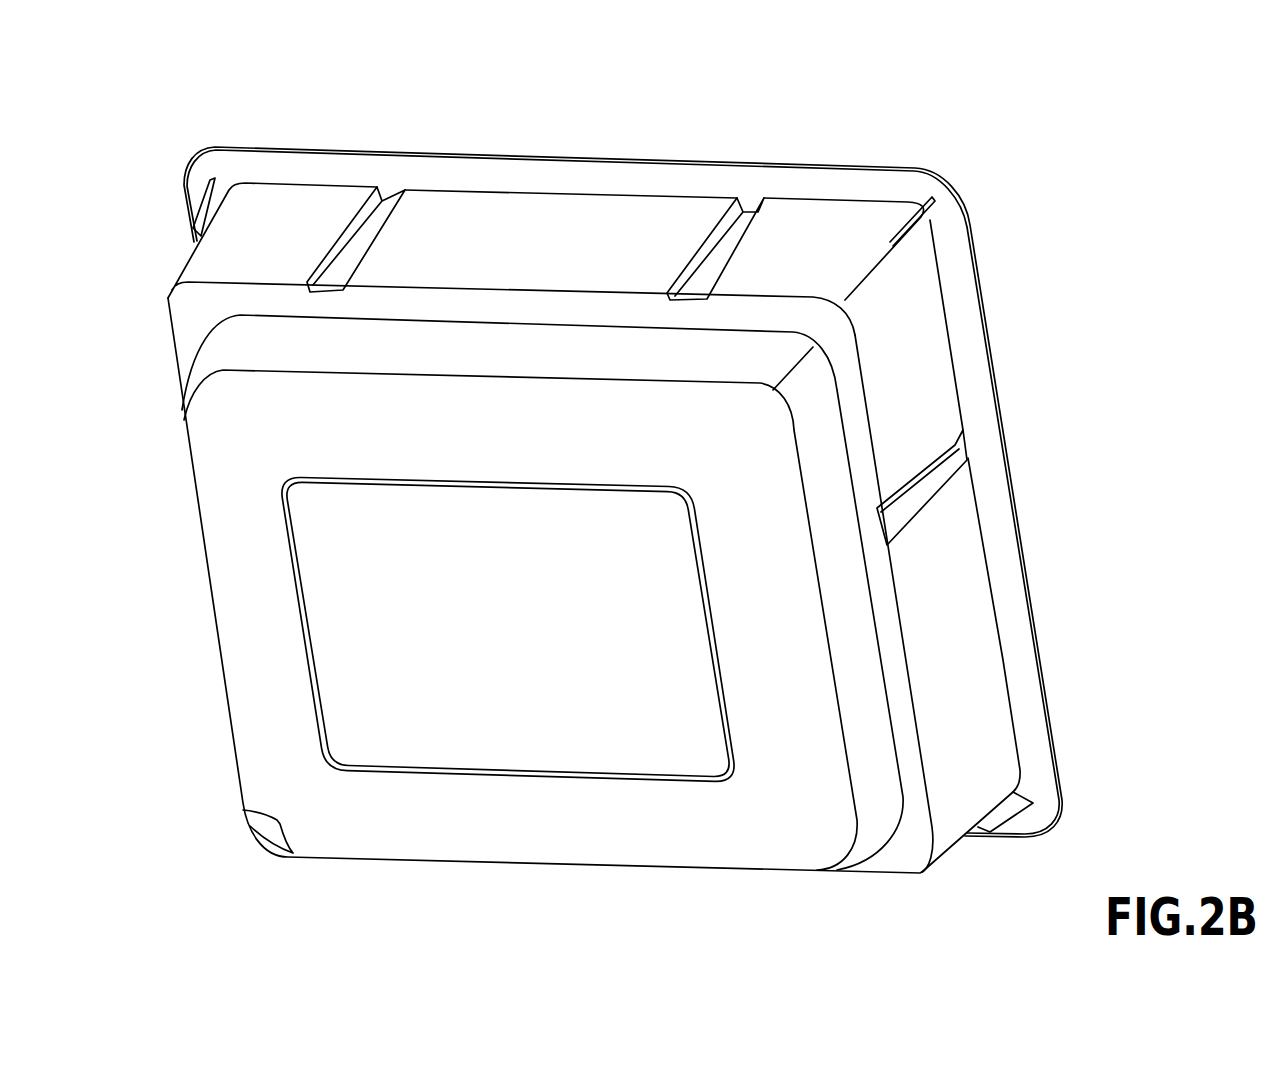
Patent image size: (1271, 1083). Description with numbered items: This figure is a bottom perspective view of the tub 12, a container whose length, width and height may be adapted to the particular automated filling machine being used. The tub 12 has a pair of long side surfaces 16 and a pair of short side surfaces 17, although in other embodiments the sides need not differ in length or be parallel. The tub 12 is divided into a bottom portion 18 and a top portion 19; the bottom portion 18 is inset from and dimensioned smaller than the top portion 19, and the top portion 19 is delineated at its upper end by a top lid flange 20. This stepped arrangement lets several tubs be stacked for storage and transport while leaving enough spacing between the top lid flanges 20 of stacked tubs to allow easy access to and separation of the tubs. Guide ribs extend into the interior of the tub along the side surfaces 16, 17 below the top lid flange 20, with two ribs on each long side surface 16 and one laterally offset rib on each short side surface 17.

The tub 12 is at (292, 90).
The long side surface 16 is at (607, 233).
The short side surface 17 is at (965, 668).
The bottom portion 18 is at (262, 413).
The top portion 19 is at (277, 262).
The top lid flange 20 is at (477, 170).